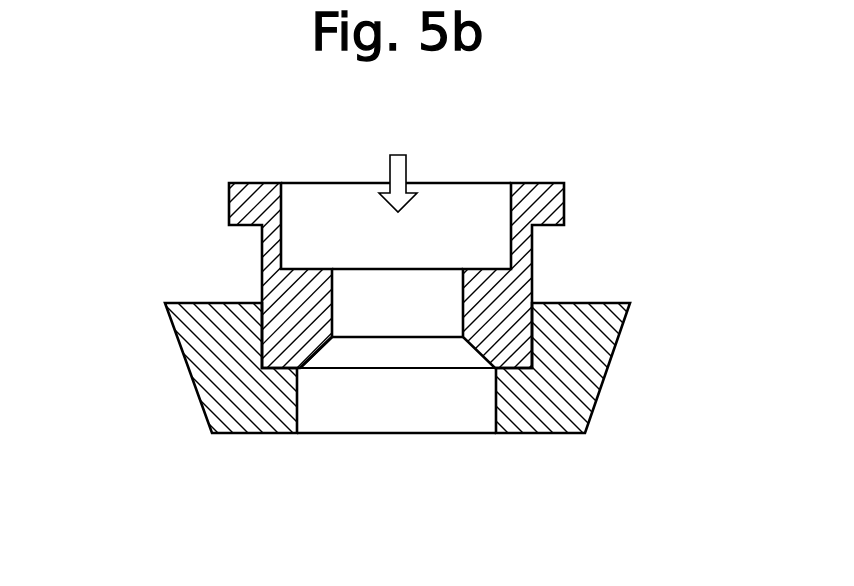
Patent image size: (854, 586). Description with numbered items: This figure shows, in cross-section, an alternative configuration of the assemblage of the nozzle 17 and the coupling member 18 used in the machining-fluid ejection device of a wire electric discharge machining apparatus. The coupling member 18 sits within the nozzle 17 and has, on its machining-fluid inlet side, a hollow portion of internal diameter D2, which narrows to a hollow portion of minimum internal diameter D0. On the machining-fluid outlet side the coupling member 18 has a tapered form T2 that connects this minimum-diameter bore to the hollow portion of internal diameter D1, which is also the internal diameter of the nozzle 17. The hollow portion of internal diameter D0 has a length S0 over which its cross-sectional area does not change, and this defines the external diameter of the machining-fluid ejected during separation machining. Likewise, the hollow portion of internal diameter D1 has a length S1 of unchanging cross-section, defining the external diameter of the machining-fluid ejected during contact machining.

The nozzle 17 is at (590, 346).
The coupling member 18 is at (564, 200).
The minimum internal diameter of the coupling member D0 is at (463, 310).
The internal diameter on machining-fluid ejection outlet side D1 is at (496, 440).
The internal diameter on machining-fluid inlet side D2 is at (511, 248).
The portion with constant cross-sectional area having internal diameter D0 S0 is at (332, 337).
The portion with constant cross-sectional area having internal diameter D1 S1 is at (297, 368).
The tapered form on machining-fluid outlet side T2 is at (318, 355).